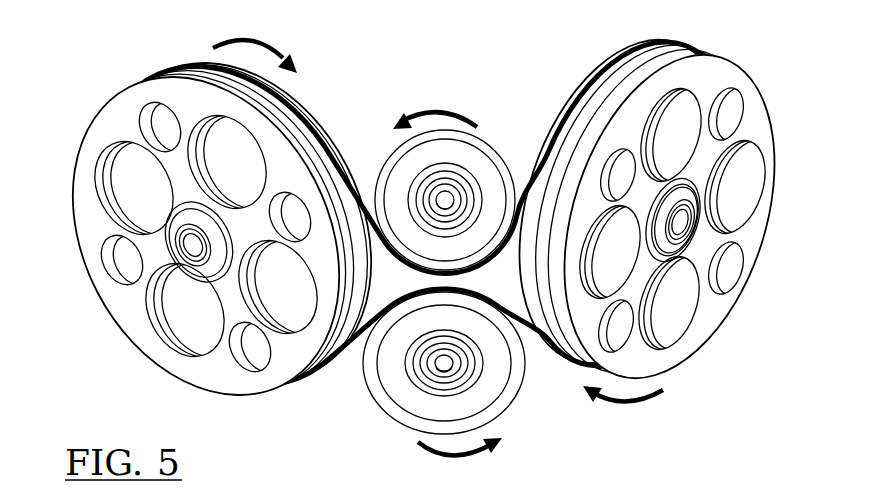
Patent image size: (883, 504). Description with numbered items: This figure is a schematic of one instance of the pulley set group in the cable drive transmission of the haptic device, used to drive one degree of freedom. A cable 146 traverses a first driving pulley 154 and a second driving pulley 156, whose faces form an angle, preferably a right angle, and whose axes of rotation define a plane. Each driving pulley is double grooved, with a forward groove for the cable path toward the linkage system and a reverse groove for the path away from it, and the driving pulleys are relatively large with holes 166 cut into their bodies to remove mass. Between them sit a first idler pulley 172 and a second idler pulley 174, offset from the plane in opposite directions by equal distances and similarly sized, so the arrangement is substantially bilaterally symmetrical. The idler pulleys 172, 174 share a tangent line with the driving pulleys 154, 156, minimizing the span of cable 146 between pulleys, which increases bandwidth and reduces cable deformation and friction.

The cable 146 is at (203, 62).
The first driving pulley 154 is at (218, 229).
The second driving pulley 156 is at (763, 240).
The opening in pulley wheel 166 is at (148, 180).
The first idler pulley 172 is at (483, 157).
The second idler pulley 174 is at (403, 393).